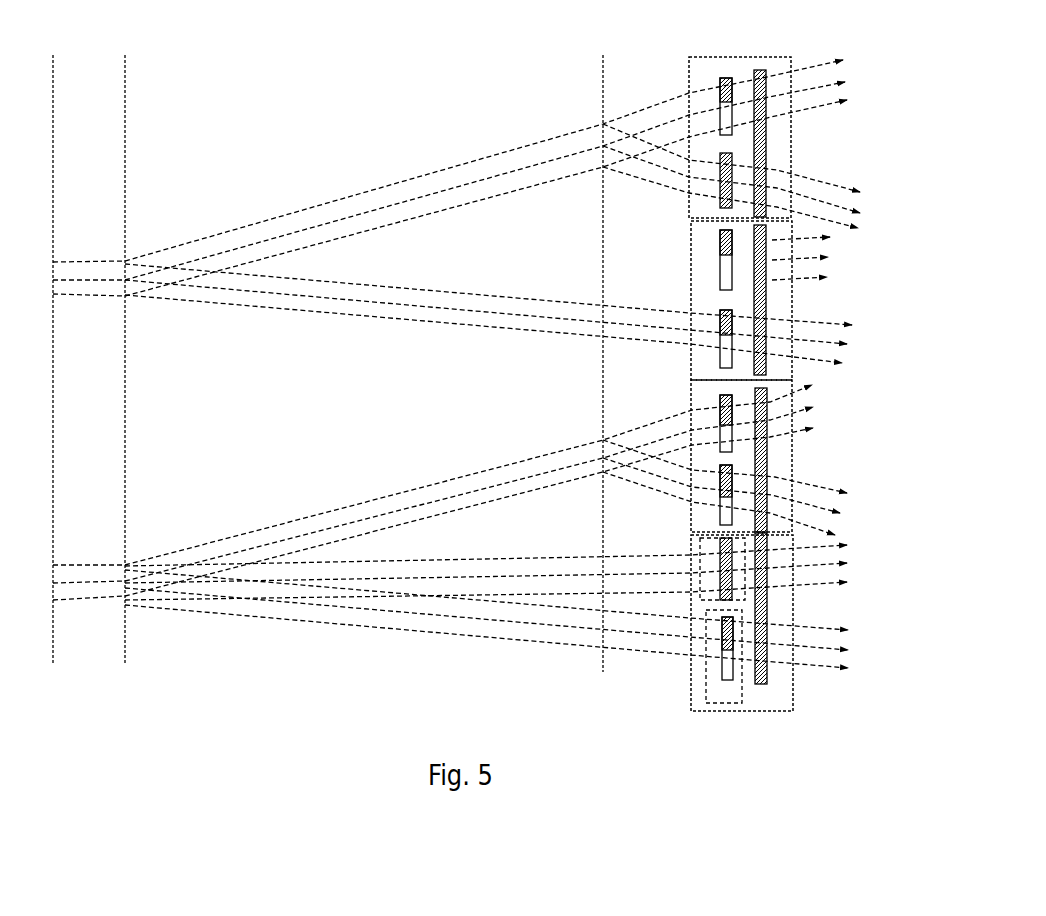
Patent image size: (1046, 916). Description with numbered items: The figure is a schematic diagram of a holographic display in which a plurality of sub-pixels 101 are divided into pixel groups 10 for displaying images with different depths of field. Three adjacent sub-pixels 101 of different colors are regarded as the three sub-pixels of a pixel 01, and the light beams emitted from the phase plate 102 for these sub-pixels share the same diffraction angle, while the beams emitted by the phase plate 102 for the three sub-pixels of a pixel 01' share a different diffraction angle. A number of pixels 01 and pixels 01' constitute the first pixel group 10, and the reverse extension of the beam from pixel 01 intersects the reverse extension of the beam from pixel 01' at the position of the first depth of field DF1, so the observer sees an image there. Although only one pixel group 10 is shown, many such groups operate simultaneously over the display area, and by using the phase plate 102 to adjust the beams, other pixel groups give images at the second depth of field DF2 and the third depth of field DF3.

The pixel group 10 is at (791, 604).
The sub-pixel 101 is at (722, 662).
The phase plate 102 is at (762, 683).
The pixel 01 is at (671, 667).
The pixel 01' is at (675, 558).
The first depth of field DF1 is at (53, 345).
The second depth of field DF2 is at (124, 345).
The third depth of field DF3 is at (602, 348).